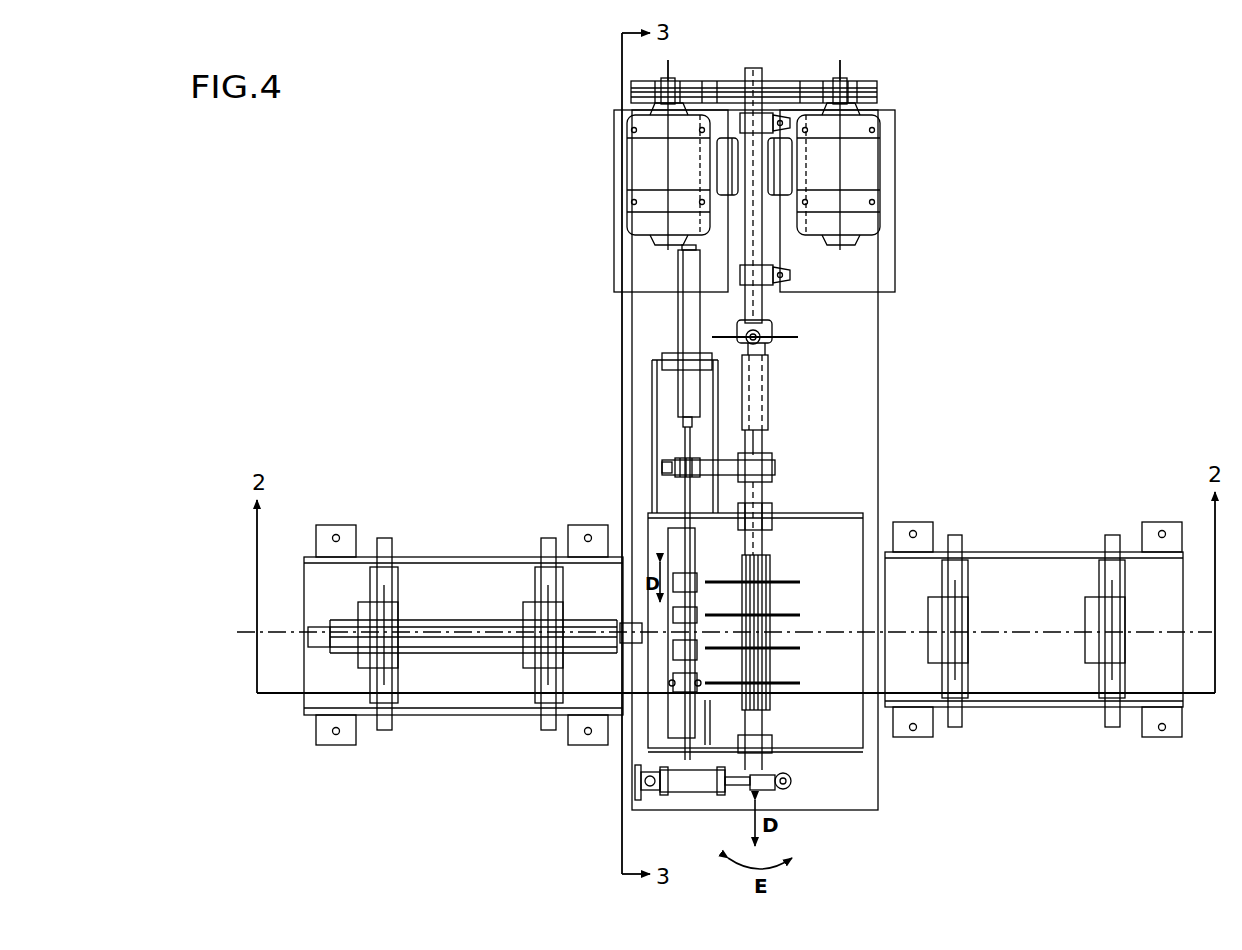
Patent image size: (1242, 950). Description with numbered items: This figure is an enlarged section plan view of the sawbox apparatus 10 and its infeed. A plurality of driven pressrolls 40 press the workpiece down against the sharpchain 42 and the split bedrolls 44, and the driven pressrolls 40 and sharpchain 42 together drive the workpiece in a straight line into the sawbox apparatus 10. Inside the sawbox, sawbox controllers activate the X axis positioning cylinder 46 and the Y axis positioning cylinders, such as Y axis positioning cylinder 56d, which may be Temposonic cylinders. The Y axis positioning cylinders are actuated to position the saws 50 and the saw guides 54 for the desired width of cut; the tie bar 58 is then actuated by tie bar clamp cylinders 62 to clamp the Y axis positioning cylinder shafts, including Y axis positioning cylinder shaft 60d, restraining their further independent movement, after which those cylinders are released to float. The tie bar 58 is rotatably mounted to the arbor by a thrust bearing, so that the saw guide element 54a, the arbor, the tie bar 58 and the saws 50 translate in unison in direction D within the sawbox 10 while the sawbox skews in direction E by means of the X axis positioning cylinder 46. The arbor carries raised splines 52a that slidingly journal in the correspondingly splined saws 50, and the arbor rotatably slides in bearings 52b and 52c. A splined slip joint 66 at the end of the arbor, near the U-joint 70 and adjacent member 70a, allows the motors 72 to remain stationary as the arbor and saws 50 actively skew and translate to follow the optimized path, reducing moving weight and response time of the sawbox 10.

The sawbox apparatus 10 is at (918, 443).
The driven pressrolls 40 is at (390, 570).
The sharpchain 42 is at (452, 642).
The split bedrolls 44 is at (378, 700).
The X axis positioning cylinder 46 is at (705, 792).
The saws 50 is at (783, 582).
The raised splines 52a is at (770, 710).
The bearing 52b is at (773, 755).
The bearing 52c is at (772, 508).
The saw guides 54 is at (672, 695).
The saw guide element 54a is at (675, 575).
The Y axis positioning cylinder 56d is at (680, 330).
The tie bar 58 is at (772, 468).
The Y axis positioning cylinder shaft 60d is at (723, 697).
The tie bar clamp cylinders 62 is at (662, 468).
The splined slip joint 66 is at (770, 393).
The U-joint 70 is at (770, 335).
The mounting plate 70a is at (763, 228).
The motors 72 is at (690, 165).